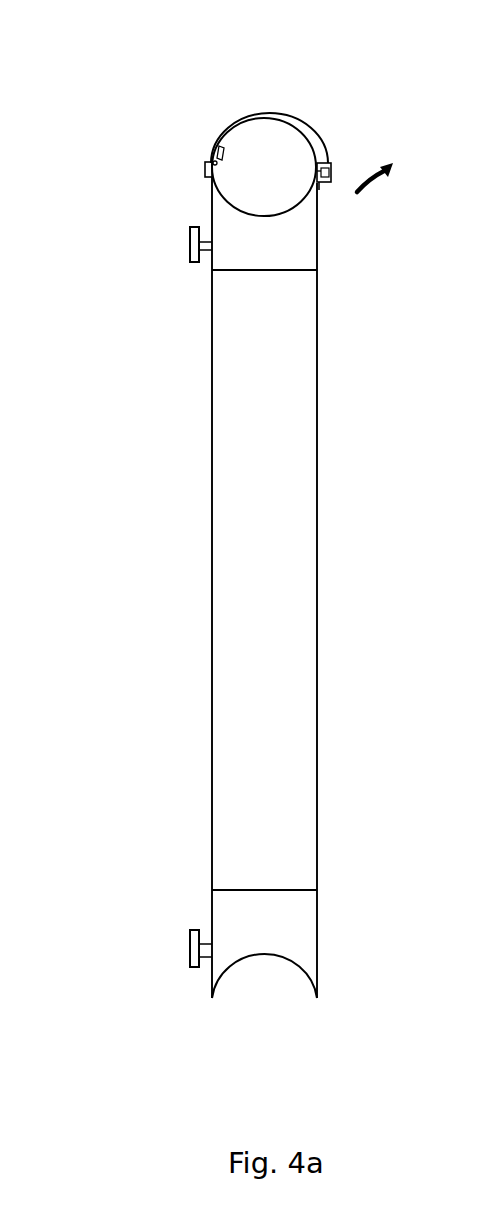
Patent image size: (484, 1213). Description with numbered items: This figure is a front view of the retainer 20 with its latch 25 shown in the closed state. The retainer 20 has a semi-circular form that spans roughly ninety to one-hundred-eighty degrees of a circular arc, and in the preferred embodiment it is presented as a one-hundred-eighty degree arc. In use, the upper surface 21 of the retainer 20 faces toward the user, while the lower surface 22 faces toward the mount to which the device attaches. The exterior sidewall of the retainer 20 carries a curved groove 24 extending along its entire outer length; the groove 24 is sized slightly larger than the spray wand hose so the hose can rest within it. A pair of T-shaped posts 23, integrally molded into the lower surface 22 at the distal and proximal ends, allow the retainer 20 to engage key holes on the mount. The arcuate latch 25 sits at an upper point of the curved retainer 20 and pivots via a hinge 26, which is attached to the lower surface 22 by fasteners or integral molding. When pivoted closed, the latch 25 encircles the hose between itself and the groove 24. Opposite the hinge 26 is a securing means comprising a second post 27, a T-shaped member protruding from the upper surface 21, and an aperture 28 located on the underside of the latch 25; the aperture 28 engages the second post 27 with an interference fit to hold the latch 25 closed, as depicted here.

The retainer 20 is at (114, 74).
The upper surface 21 is at (317, 408).
The lower surface 22 is at (210, 490).
The posts 23 is at (188, 253).
The curved groove 24 is at (234, 204).
The latch 25 is at (269, 111).
The hinge 26 is at (211, 160).
The second post 27 is at (332, 164).
The aperture 28 is at (325, 184).